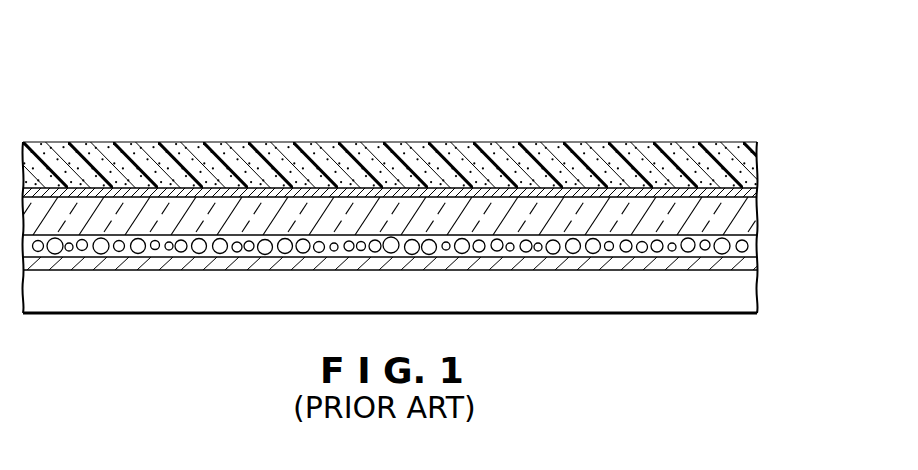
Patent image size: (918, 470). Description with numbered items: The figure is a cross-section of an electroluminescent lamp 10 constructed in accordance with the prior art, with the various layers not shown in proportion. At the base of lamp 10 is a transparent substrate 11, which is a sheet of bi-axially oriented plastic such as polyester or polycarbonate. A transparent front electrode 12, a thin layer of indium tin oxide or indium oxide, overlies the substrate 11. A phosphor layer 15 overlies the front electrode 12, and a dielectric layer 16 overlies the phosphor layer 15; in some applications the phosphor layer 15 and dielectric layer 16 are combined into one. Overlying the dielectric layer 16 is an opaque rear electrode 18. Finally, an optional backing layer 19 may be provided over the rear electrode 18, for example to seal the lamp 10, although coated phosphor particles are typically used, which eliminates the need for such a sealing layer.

The lamp 10 is at (154, 76).
The transparent substrate 11 is at (757, 290).
The transparent front electrode 12 is at (757, 258).
The phosphor layer 15 is at (757, 240).
The dielectric layer 16 is at (757, 215).
The opaque rear electrode 18 is at (757, 190).
The backing layer 19 is at (757, 160).